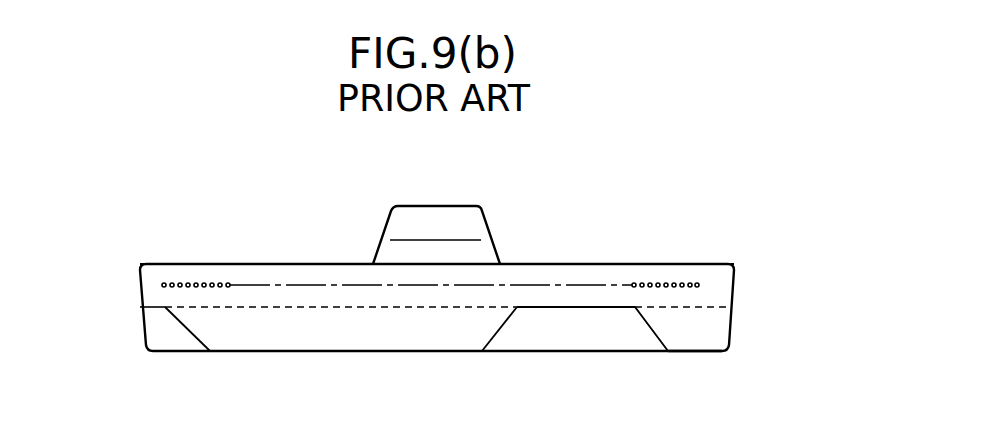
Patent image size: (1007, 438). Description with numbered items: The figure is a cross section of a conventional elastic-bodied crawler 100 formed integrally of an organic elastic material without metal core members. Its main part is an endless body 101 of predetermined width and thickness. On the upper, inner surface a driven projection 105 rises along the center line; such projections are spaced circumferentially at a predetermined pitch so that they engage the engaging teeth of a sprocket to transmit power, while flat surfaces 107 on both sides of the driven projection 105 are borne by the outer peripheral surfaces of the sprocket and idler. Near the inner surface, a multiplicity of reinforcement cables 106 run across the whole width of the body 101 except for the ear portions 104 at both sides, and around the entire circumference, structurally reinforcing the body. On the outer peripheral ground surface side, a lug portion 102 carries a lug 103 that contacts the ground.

The elastic-bodied crawler 100 is at (277, 245).
The endless body 101 is at (688, 275).
The lug portion 102 is at (704, 344).
The lug 103 is at (363, 348).
The ear portion 104 is at (155, 273).
The driven projection 105 is at (468, 227).
The reinforcement cable 106 is at (641, 285).
The flat surface 107 is at (329, 262).